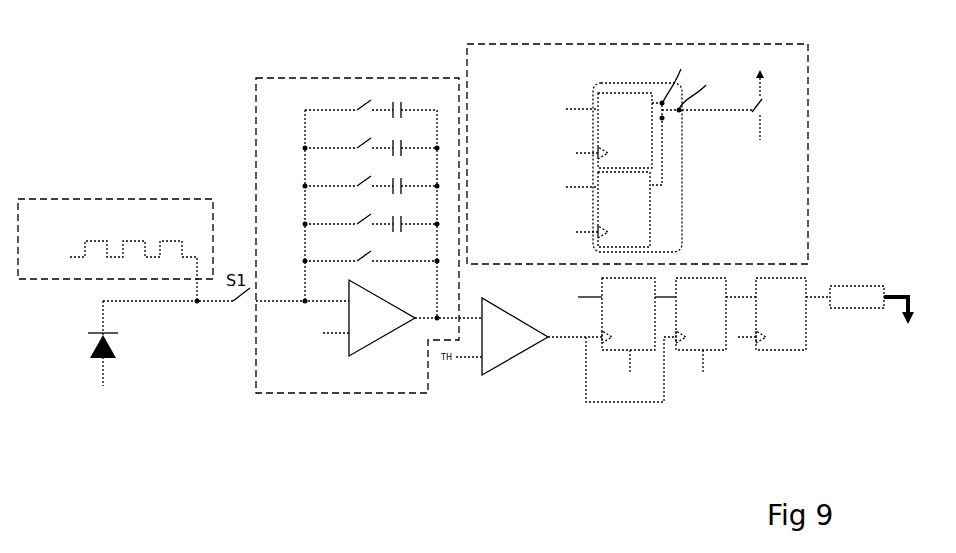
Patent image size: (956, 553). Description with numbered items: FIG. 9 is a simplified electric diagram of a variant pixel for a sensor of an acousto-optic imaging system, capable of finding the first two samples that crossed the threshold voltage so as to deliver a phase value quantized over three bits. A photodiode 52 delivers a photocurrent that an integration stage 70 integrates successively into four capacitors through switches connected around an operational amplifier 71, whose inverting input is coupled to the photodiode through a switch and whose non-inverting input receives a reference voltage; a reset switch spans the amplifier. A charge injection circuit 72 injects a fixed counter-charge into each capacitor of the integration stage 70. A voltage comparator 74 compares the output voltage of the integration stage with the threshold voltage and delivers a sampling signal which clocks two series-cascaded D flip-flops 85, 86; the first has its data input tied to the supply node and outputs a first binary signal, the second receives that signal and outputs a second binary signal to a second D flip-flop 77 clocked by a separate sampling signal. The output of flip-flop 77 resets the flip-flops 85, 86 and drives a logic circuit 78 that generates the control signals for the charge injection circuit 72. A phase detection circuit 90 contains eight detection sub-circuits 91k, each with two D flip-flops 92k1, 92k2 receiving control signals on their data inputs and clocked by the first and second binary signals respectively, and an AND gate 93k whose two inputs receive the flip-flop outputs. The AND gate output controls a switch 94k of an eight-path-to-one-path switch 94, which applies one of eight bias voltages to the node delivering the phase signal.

The charge injection circuit 72 is at (72, 199).
The photodiode 52 is at (115, 342).
The integration stage 70 is at (362, 267).
The operational amplifier 71 is at (382, 338).
The voltage comparator 74 is at (513, 360).
The D flip-flop 85 is at (622, 352).
The D flip-flop 86 is at (687, 352).
The second D flip-flop 77 is at (784, 352).
The logic circuit 78 is at (858, 285).
The phase detection circuit 90 is at (675, 155).
The detection sub-circuit 91k is at (627, 157).
The D flip-flop 92k1 is at (616, 92).
The D flip-flop 92k2 is at (615, 258).
The AND gate 93k is at (679, 113).
The switch 94k is at (755, 113).
The eight-path-to-one-path switch 94 is at (751, 114).